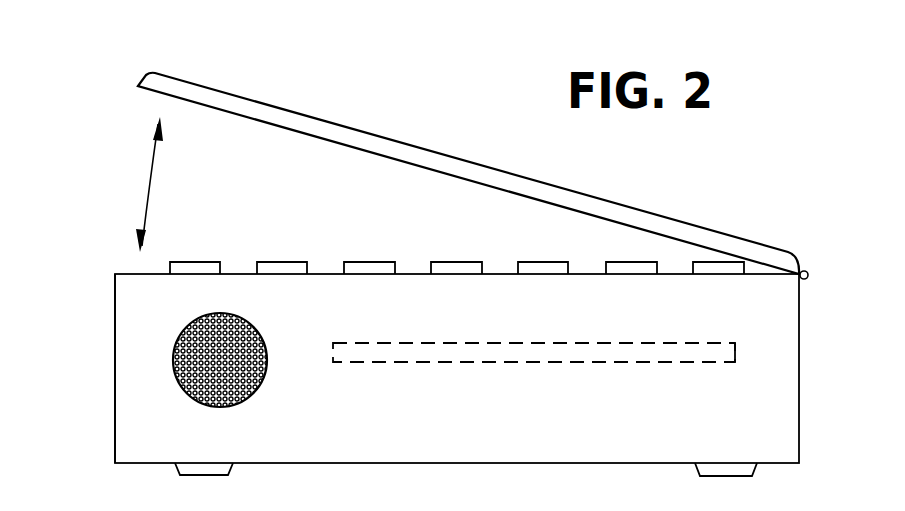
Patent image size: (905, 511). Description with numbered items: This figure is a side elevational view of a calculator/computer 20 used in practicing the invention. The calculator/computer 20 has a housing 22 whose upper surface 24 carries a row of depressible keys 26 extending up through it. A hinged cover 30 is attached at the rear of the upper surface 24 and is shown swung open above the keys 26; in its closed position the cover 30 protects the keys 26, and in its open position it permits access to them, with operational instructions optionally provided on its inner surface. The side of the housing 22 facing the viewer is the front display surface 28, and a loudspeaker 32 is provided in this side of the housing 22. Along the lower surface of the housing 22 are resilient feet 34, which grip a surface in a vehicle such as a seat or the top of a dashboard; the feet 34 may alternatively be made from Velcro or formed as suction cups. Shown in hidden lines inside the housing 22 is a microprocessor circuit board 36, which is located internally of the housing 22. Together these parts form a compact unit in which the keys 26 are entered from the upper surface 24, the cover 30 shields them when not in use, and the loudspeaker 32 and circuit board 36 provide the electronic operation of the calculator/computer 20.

The calculator/computer 20 is at (406, 96).
The housing 22 is at (770, 435).
The upper surface 24 is at (457, 218).
The depressible keys 26 is at (285, 268).
The front display surface 28 is at (111, 351).
The hinged cover 30 is at (622, 213).
The loudspeaker 32 is at (247, 383).
The resilient feet 34 is at (193, 470).
The microprocessor circuit board 36 is at (717, 353).